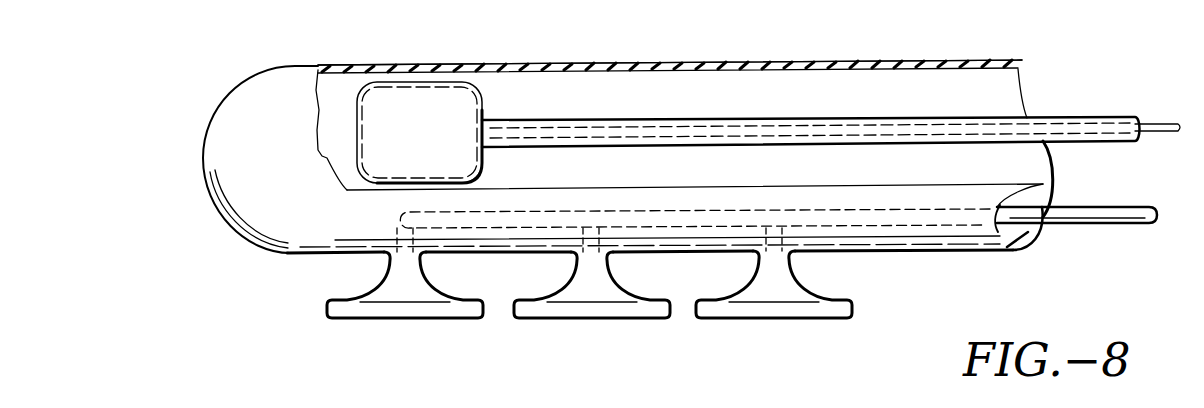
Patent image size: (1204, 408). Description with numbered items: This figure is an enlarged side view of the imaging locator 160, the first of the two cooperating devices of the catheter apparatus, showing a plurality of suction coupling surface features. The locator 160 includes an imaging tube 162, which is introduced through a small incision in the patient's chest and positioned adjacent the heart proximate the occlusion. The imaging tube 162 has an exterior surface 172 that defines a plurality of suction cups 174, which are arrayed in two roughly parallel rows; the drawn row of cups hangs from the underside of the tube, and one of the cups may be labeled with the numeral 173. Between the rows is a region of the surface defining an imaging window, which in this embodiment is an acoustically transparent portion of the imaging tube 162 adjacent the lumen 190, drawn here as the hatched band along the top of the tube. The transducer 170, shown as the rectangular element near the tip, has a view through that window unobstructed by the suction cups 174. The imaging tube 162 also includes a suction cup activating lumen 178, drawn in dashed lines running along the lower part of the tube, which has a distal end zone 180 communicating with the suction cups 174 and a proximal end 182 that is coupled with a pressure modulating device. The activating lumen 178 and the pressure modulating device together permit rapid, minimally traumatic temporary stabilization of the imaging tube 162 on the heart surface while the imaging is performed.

The imaging locator 160 is at (957, 63).
The imaging tube 162 is at (337, 63).
The transducer 170 is at (416, 128).
The exterior surface 172 is at (292, 255).
The support foot 173 is at (569, 330).
The suction cups 174 is at (330, 304).
The suction cup activating lumen 178 is at (917, 226).
The distal end zone 180 is at (402, 254).
The proximal end 182 is at (1147, 225).
The lumen 190 is at (668, 63).